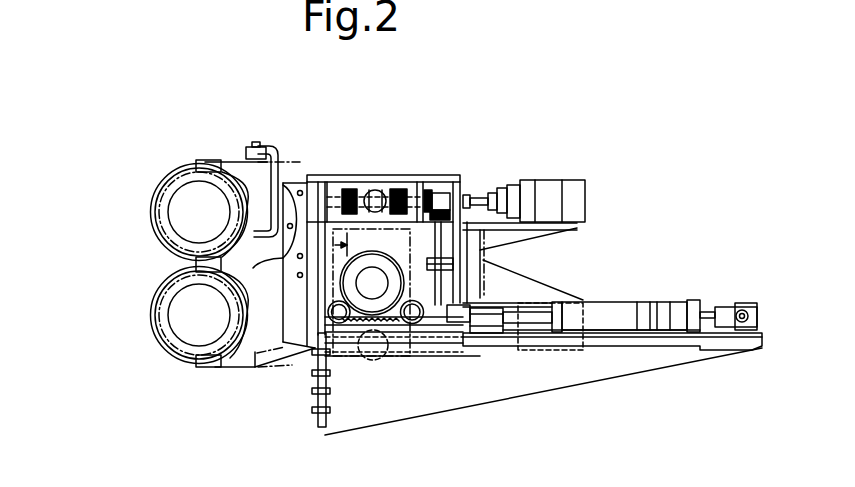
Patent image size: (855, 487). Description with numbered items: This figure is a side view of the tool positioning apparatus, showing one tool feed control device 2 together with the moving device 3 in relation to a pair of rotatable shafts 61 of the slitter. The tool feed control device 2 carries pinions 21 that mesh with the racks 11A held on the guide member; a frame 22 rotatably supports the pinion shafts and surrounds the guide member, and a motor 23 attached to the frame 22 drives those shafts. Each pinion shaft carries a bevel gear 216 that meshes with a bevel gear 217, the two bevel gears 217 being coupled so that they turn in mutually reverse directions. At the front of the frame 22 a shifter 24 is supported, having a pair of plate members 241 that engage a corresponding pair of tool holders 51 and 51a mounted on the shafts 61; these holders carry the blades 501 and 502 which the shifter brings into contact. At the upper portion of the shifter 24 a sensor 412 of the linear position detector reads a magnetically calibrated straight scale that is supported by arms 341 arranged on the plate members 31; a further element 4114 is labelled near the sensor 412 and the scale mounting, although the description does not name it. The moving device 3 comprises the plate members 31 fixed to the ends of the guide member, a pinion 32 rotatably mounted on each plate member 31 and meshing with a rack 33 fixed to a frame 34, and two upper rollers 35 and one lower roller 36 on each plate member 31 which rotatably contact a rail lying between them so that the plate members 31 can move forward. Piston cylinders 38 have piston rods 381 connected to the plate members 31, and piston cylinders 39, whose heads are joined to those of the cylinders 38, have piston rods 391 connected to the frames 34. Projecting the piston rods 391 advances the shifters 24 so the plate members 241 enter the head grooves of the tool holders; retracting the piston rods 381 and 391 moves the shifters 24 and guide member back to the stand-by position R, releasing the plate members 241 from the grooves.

The tool feed control device 2 is at (338, 162).
The pinion 21 is at (350, 187).
The rack 11A is at (384, 189).
The bevel gear 216 is at (430, 188).
The frame 22 is at (435, 188).
The bevel gear 217 is at (470, 200).
The motor 23 is at (560, 182).
The shifter 24 is at (205, 158).
The plate member 241 is at (240, 220).
The blade 501 is at (153, 190).
The blade 502 is at (153, 290).
The tool holder 51 is at (150, 208).
The tool holder 51a is at (152, 322).
The rotatable shaft 61 is at (170, 245).
The arm 341 is at (279, 155).
The sensor 412 is at (249, 152).
The clamp screw 4114 is at (258, 132).
The moving device 3 is at (630, 294).
The plate member 31 is at (470, 308).
The pinion 32 is at (453, 262).
The rack 33 is at (378, 333).
The frame 34 is at (490, 398).
The upper roller 35 is at (410, 323).
The lower roller 36 is at (365, 345).
The piston cylinder 38 is at (618, 322).
The piston rod 381 is at (490, 340).
The piston cylinder 39 is at (690, 303).
The piston rod 391 is at (715, 318).
The stand-by position R is at (252, 375).